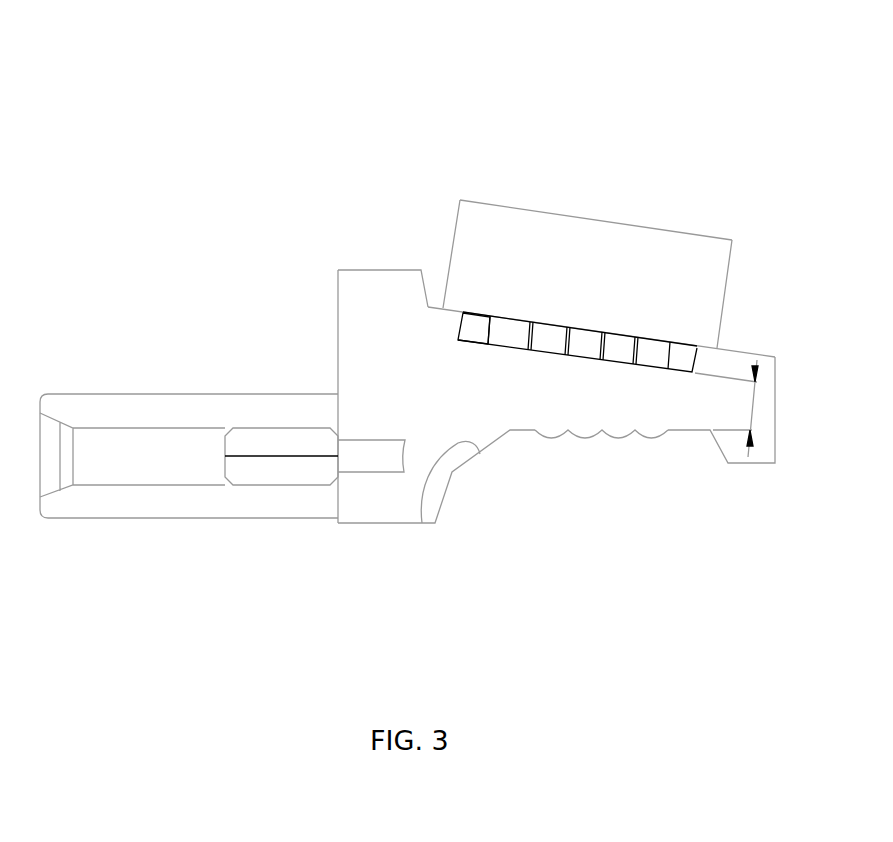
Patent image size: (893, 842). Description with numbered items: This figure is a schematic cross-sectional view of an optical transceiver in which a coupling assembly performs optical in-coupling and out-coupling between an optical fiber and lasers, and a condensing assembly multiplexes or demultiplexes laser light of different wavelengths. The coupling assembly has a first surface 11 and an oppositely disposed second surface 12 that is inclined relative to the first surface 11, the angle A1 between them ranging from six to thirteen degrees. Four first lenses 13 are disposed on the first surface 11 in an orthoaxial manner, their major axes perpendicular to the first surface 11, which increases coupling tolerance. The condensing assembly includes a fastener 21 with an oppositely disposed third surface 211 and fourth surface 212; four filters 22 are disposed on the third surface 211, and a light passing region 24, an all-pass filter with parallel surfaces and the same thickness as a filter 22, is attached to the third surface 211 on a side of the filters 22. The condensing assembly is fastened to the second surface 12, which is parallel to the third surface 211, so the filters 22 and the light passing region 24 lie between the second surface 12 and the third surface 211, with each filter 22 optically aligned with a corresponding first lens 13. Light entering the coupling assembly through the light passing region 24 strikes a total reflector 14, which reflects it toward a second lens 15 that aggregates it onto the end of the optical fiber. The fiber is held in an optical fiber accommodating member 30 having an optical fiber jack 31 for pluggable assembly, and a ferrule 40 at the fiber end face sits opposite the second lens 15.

The first surface 11 is at (688, 430).
The second surface 12 is at (692, 348).
The first lenses 13 is at (648, 438).
The total reflector 14 is at (420, 523).
The second lens 15 is at (403, 448).
The fastener 21 is at (548, 267).
The third surface 211 is at (474, 310).
The fourth surface 212 is at (595, 221).
The filters 22 is at (680, 370).
The light passing region 24 is at (503, 330).
The optical fiber accommodating member 30 is at (174, 413).
The optical fiber jack 31 is at (158, 459).
The ferrule 40 is at (282, 457).
The angle A1 is at (726, 408).